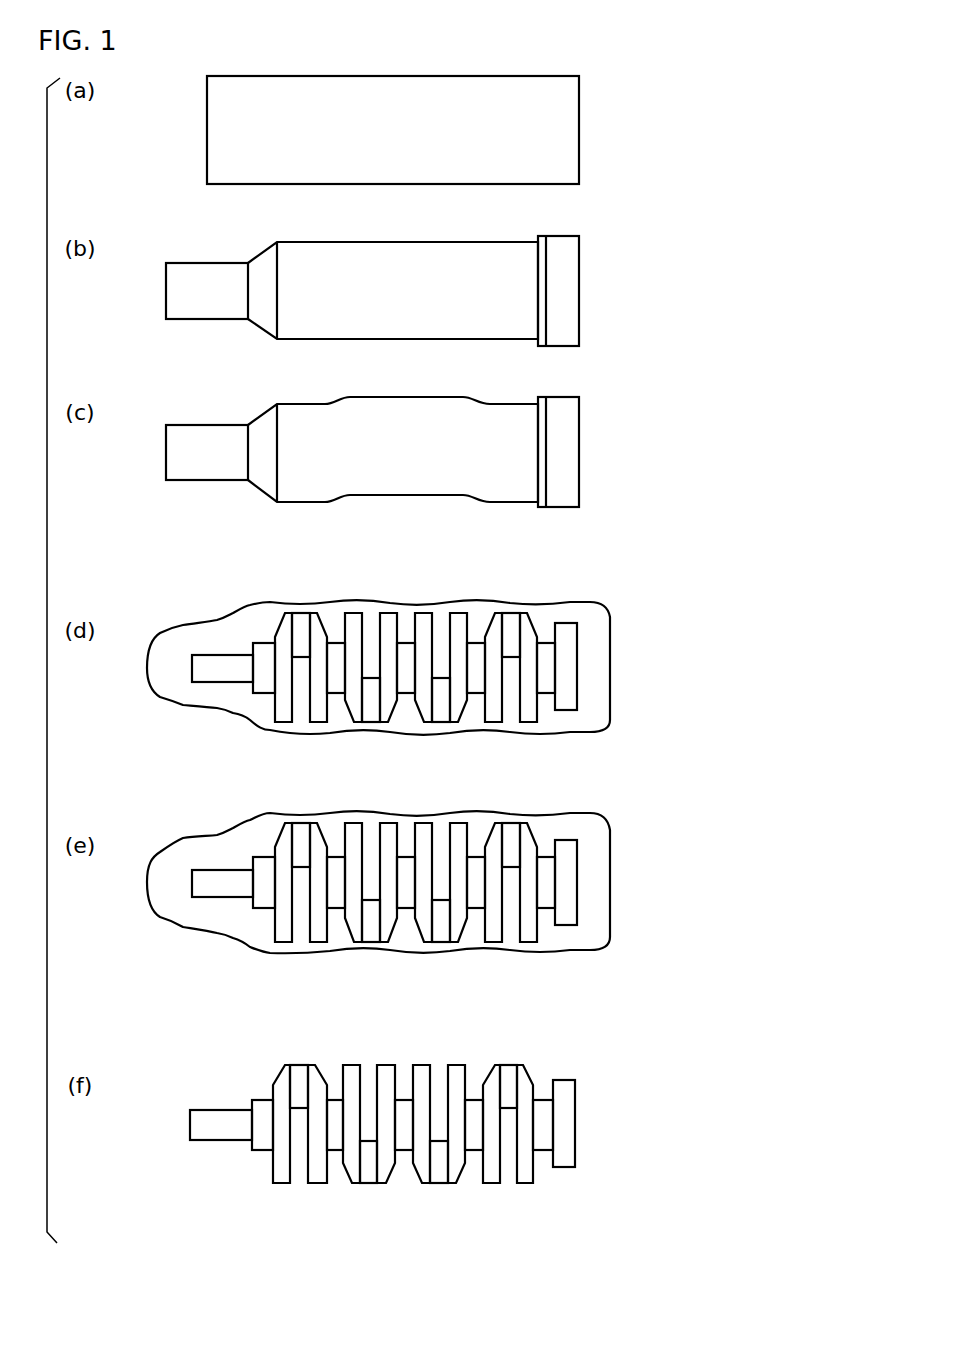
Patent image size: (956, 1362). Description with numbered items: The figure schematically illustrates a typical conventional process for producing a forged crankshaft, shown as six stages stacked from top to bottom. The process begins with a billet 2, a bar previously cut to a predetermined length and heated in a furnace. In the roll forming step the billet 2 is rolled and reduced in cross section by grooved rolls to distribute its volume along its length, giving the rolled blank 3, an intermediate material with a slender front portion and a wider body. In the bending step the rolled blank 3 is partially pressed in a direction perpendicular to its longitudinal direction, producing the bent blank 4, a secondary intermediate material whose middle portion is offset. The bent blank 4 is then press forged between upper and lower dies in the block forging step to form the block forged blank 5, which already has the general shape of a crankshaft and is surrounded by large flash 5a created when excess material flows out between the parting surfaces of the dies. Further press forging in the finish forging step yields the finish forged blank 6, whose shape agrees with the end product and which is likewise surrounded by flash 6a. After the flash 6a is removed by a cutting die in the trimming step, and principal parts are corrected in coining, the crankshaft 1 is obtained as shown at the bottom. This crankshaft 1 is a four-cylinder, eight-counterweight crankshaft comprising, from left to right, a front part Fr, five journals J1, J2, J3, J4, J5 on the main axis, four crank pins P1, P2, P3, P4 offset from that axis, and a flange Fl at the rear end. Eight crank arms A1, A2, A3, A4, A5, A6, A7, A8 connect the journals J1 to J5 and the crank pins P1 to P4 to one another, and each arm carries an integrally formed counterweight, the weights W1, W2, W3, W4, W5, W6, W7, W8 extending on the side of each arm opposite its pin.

The crankshaft 1 is at (412, 1123).
The billet 2 is at (596, 96).
The rolled blank 3 is at (596, 257).
The bent blank 4 is at (596, 419).
The block forged blank 5 is at (407, 658).
The flash 5a is at (597, 702).
The finish forged blank 6 is at (407, 874).
The flash 6a is at (597, 917).
The front part Fr is at (215, 1112).
The flange FI is at (572, 1080).
The journal J1 is at (263, 1098).
The journal J2 is at (335, 1098).
The journal J3 is at (405, 1098).
The journal J4 is at (477, 1098).
The journal J5 is at (543, 1098).
The crank pin P1 is at (302, 1066).
The crank pin P2 is at (369, 1184).
The crank pin P3 is at (439, 1184).
The crank pin P4 is at (510, 1066).
The crank arm A1 is at (275, 1080).
The crank arm A2 is at (324, 1082).
The crank arm A3 is at (348, 1177).
The crank arm A4 is at (390, 1177).
The crank arm A5 is at (418, 1177).
The crank arm A6 is at (460, 1177).
The crank arm A7 is at (485, 1080).
The crank arm A8 is at (531, 1082).
The counterweight W1 is at (279, 1179).
The counterweight W2 is at (315, 1179).
The counterweight W3 is at (348, 1068).
The counterweight W4 is at (383, 1068).
The counterweight W5 is at (418, 1068).
The counterweight W6 is at (453, 1068).
The counterweight W7 is at (488, 1179).
The counterweight W8 is at (523, 1179).